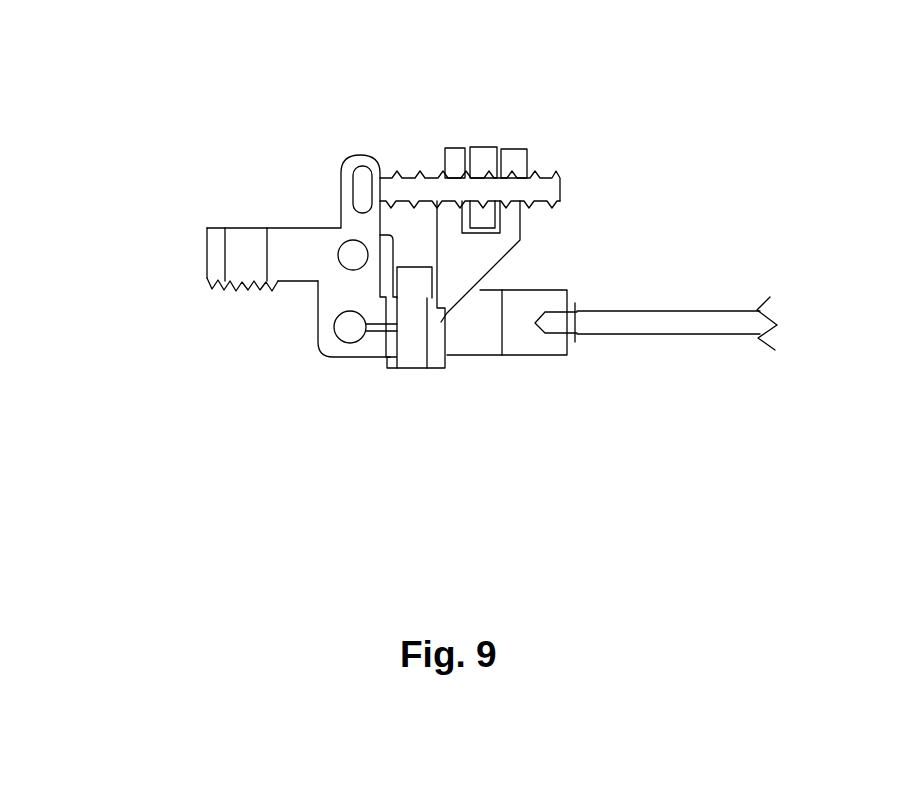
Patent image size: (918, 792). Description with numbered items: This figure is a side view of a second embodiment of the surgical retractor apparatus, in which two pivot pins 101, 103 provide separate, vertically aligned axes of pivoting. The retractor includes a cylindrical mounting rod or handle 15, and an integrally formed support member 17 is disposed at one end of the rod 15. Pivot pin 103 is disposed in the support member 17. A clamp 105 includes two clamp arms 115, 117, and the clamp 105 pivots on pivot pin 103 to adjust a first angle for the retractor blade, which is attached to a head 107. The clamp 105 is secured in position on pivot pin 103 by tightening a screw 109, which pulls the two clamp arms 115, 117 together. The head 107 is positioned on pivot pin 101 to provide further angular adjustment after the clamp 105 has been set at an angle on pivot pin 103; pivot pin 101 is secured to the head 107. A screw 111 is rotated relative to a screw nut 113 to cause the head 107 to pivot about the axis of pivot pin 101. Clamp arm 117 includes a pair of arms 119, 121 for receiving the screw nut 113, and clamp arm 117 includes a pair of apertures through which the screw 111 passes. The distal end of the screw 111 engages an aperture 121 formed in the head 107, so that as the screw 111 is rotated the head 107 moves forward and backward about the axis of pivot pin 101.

The mounting rod 15 is at (713, 286).
The support member 17 is at (537, 342).
The pivot pin 101 is at (350, 258).
The pivot pin 103 is at (331, 353).
The clamp 105 is at (357, 377).
The head 107 is at (217, 253).
The screw 109 is at (413, 317).
The screw 111 is at (395, 185).
The screw nut 113 is at (496, 146).
The clamp arm 115 is at (382, 342).
The clamp arm 117 is at (440, 320).
The arm 119 is at (448, 148).
The arm 121 is at (367, 190).